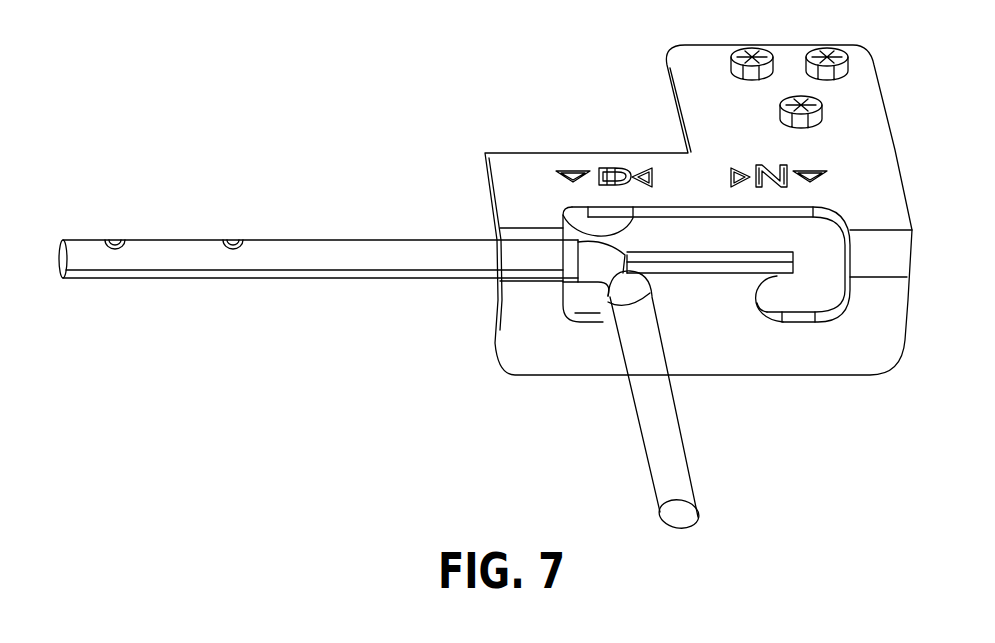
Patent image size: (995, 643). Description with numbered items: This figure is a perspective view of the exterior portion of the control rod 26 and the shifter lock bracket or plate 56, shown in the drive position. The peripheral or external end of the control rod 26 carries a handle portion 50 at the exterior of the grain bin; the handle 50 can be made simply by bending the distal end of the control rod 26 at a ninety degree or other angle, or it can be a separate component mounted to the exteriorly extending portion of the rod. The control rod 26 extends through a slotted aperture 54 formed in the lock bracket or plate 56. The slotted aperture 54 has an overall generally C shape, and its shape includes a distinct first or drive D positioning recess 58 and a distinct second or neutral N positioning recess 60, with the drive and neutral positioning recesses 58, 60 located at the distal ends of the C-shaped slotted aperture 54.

The control rod 26 is at (337, 263).
The handle portion 50 is at (653, 432).
The slotted aperture 54 is at (583, 225).
The shifter lock bracket or plate 56 is at (870, 192).
The drive positioning recess 58 is at (606, 312).
The neutral positioning recess 60 is at (772, 308).